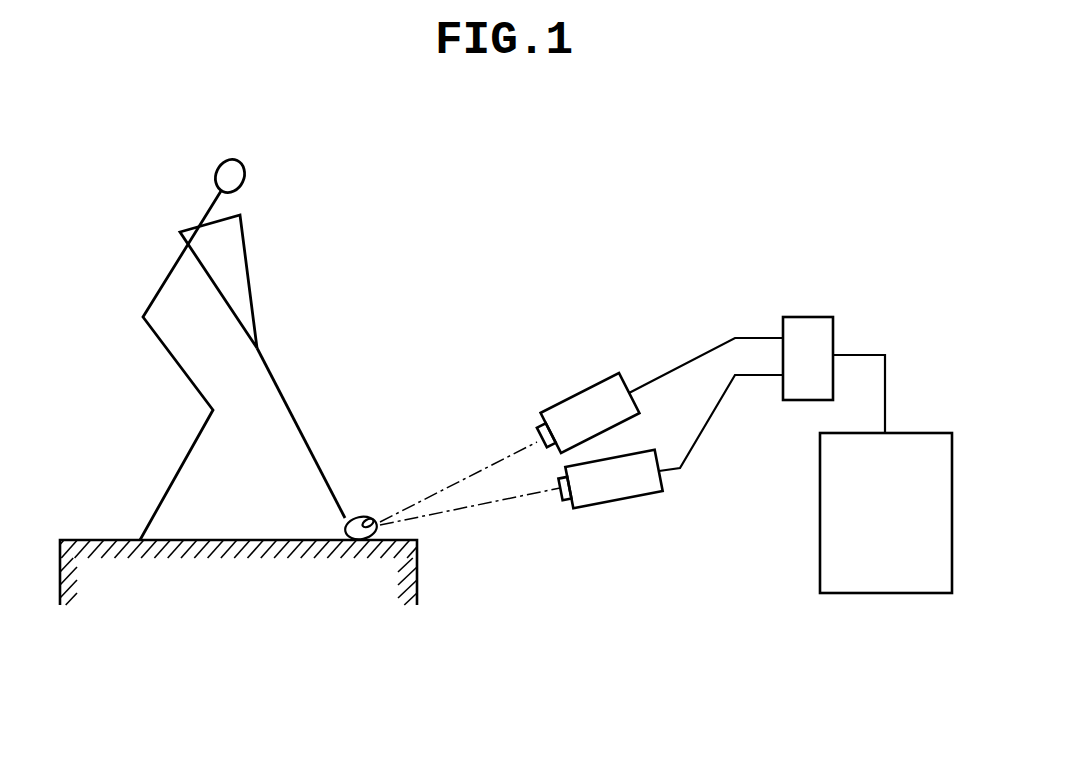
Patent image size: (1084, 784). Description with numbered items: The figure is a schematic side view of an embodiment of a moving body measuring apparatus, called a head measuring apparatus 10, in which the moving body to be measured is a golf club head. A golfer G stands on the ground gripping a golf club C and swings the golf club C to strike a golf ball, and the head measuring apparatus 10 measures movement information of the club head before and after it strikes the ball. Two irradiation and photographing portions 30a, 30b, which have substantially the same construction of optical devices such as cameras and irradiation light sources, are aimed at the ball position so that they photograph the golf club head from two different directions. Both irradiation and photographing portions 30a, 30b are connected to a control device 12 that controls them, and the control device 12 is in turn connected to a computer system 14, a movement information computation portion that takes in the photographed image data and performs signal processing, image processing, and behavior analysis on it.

The moving body measuring apparatus 10 is at (463, 173).
The control device 12 is at (813, 317).
The computer system 14 is at (913, 433).
The irradiation and photographing portion 30a is at (578, 391).
The irradiation and photographing portion 30b is at (633, 502).
The golfer G is at (248, 273).
The golf club C is at (292, 415).